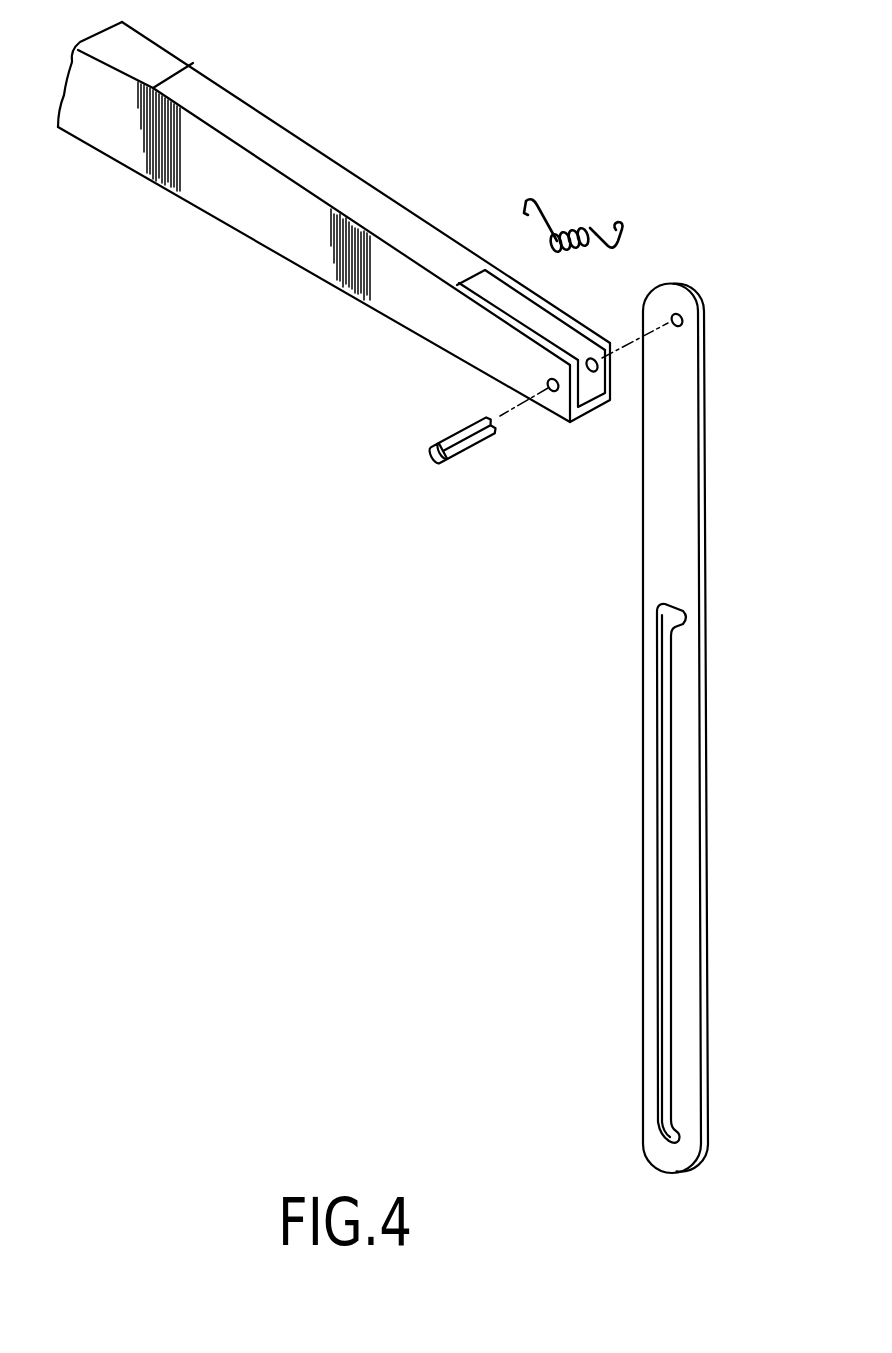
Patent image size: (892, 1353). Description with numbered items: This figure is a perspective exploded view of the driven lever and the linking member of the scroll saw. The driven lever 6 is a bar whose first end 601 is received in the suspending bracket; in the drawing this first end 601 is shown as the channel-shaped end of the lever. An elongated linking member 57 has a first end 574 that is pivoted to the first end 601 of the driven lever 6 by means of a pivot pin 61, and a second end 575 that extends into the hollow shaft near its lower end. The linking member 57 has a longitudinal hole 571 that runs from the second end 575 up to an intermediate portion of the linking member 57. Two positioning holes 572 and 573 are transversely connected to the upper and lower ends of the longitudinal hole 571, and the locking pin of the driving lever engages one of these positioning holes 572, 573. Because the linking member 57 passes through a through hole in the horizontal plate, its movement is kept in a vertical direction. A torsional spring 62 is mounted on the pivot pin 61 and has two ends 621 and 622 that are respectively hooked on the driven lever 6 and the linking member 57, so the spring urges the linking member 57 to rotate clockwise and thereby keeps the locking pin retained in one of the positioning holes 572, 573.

The driven lever 6 is at (303, 160).
The first end of driven lever 601 is at (595, 412).
The pivot pin 61 is at (478, 442).
The torsional spring 62 is at (577, 365).
The first end of torsional spring 621 is at (523, 212).
The second end of torsional spring 622 is at (623, 228).
The linking member 57 is at (706, 575).
The longitudinal hole 571 is at (665, 762).
The positioning hole 572 is at (660, 619).
The positioning hole 573 is at (672, 1140).
The first end of linking member 574 is at (690, 303).
The second end of linking member 575 is at (703, 1165).